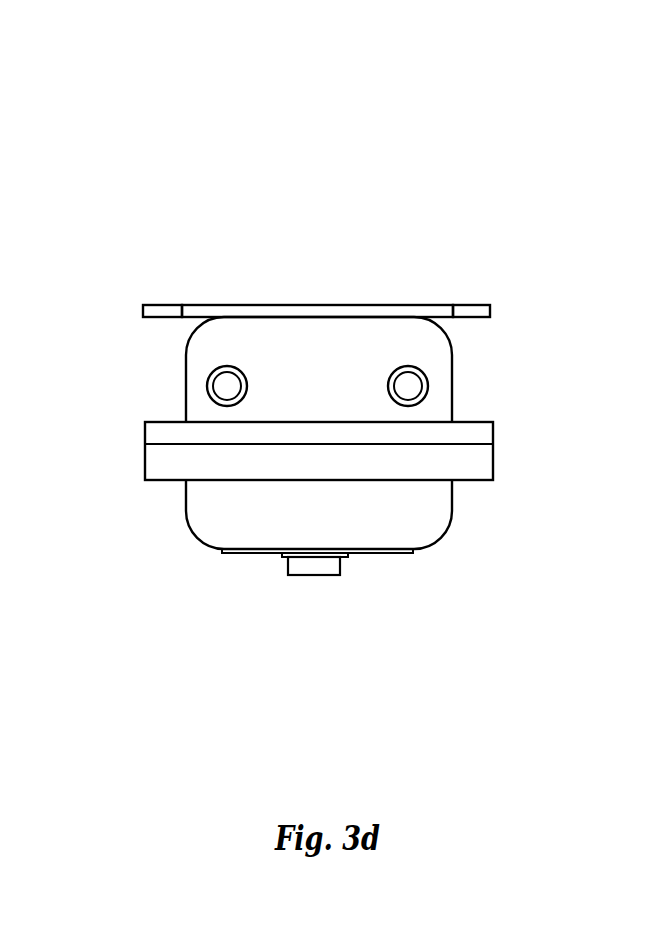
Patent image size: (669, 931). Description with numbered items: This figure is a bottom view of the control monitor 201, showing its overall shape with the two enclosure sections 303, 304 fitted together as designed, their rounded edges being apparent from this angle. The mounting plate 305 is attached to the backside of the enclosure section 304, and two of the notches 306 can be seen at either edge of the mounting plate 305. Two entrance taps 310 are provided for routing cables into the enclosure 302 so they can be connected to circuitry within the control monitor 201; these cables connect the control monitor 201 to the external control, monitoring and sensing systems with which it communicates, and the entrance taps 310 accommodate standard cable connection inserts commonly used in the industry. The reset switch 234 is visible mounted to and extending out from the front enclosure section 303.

The control monitor 201 is at (317, 208).
The enclosure 302 is at (140, 453).
The enclosure section 303 is at (187, 512).
The enclosure section 304 is at (452, 390).
The mounting plate 305 is at (388, 305).
The notches 306 is at (457, 300).
The entrance taps 310 is at (408, 362).
The reset switch 234 is at (315, 575).